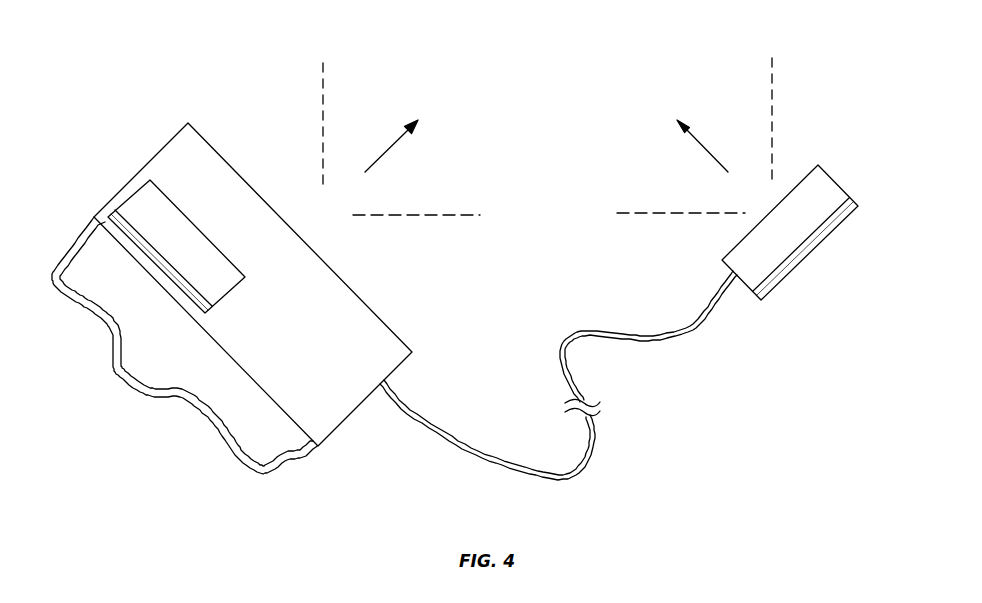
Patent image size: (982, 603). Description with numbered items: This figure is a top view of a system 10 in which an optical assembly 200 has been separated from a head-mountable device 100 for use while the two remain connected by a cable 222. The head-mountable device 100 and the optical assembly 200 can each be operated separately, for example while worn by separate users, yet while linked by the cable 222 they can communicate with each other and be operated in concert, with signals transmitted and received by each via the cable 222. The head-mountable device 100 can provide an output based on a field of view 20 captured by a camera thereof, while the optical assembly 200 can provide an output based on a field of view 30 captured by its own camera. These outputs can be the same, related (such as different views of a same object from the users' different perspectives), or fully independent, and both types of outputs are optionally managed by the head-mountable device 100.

The system 10 is at (195, 67).
The field of view 20 is at (323, 128).
The field of view 30 is at (772, 122).
The head-mountable device 100 is at (168, 142).
The optical assembly 200 is at (121, 189).
The cable 222 is at (570, 372).